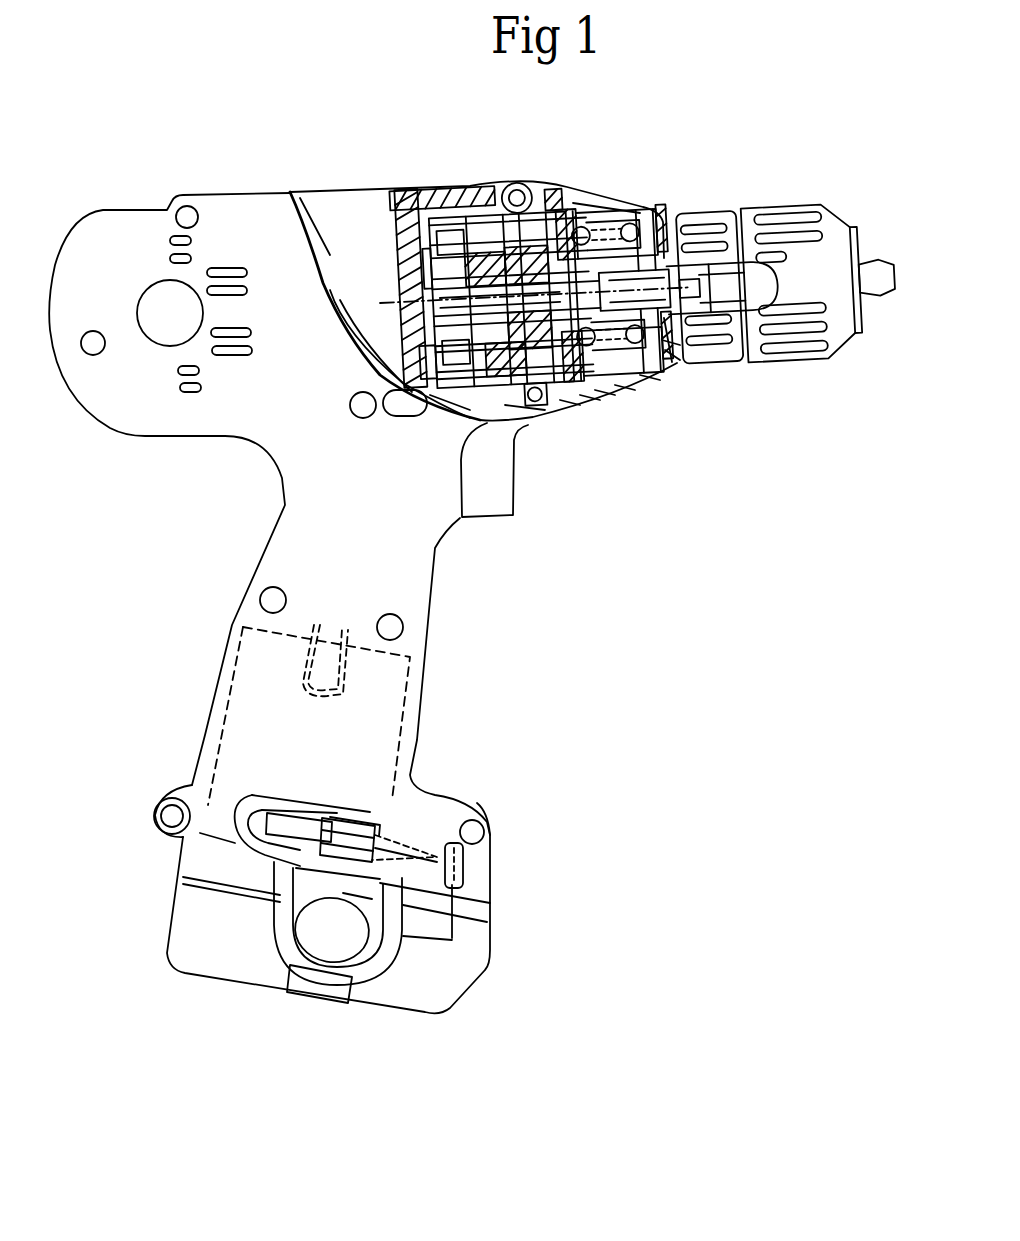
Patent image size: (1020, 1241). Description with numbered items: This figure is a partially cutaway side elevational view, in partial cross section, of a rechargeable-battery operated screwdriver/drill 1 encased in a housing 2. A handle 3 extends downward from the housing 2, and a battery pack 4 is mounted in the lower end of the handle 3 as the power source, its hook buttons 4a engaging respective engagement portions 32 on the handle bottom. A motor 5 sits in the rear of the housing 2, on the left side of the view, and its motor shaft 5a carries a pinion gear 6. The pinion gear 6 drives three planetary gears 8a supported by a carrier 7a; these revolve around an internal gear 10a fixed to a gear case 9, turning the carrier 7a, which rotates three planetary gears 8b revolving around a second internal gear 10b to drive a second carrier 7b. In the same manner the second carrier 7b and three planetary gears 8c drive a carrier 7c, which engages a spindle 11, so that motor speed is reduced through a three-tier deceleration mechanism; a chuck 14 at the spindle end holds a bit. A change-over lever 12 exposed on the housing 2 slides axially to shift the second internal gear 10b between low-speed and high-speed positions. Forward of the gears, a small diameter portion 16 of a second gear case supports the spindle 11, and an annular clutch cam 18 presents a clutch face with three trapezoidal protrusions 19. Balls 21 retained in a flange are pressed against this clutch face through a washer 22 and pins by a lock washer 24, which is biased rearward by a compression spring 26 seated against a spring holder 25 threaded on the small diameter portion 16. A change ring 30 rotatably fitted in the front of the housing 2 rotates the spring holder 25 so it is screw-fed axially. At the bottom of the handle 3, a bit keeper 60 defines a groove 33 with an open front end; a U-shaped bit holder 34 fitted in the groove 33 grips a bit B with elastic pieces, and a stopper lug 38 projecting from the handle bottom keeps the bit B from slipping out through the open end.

The screwdriver/drill 1 is at (303, 168).
The housing 2 is at (215, 208).
The handle 3 is at (272, 548).
The battery pack 4 is at (400, 988).
The hook buttons 4a is at (325, 940).
The motor 5 is at (310, 237).
The motor shaft 5a is at (377, 330).
The pinion gear 6 is at (370, 370).
The carrier 7a is at (437, 407).
The second carrier 7b is at (523, 417).
The carrier 7c is at (600, 400).
The planetary gears 8a is at (443, 193).
The planetary gears 8b is at (500, 197).
The planetary gears 8c is at (573, 200).
The gear case 9 is at (483, 420).
The internal gear 10a is at (430, 200).
The second internal gear 10b is at (483, 197).
The spindle 11 is at (660, 210).
The change-over lever 12 is at (385, 190).
The chuck 14 is at (748, 210).
The small diameter portion 16 is at (620, 397).
The clutch cam 18 is at (540, 200).
The trapezoidal protrusions 19 is at (567, 407).
The ball 21 is at (567, 200).
The washer 22 is at (587, 407).
The lock washer 24 is at (607, 197).
The spring holder 25 is at (673, 360).
The compression spring 26 is at (650, 397).
The change ring 30 is at (677, 357).
The engagement portions 32 is at (490, 917).
The groove 33 is at (290, 818).
The bit holder 34 is at (357, 840).
The stopper lug 38 is at (470, 860).
The bit keepers 60 is at (240, 800).
The bit B is at (420, 838).